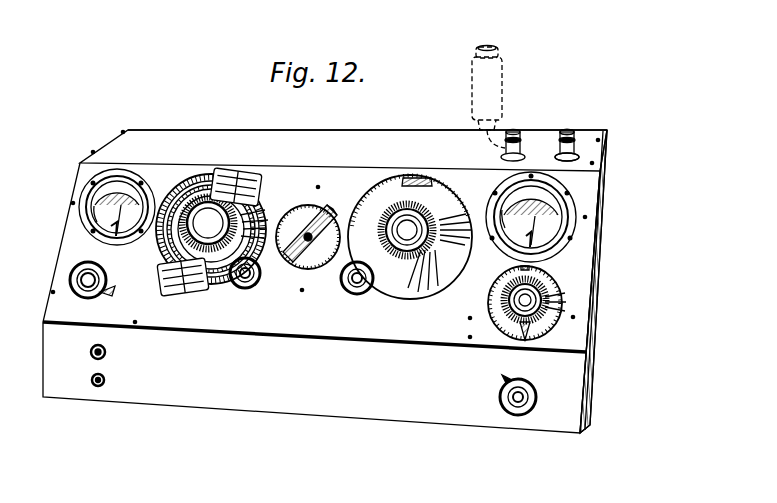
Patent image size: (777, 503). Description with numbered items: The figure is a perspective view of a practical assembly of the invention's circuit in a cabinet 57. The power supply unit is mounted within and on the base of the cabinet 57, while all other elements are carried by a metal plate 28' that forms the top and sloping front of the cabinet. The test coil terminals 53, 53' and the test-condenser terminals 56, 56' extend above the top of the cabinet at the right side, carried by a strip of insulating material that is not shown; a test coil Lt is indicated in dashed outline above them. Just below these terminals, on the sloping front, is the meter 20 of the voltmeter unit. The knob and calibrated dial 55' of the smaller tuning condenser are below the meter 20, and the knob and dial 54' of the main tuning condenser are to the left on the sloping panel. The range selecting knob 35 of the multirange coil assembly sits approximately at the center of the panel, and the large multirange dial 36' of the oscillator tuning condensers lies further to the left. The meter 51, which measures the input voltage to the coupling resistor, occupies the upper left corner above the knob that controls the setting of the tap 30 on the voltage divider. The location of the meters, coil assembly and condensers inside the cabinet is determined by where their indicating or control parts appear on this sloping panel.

The meter 51 is at (92, 192).
The tap 30 is at (70, 277).
The multirange dial 36' is at (212, 218).
The range selecting knob 35 is at (305, 206).
The knob and dial 54' is at (418, 237).
The metal plate 28' is at (367, 116).
The test coil terminal 53 is at (515, 128).
The test coil terminal 53' is at (557, 135).
The test-condenser terminal 56 is at (576, 131).
The test-condenser terminal 56' is at (602, 160).
The lamp Lt is at (472, 77).
The meter 20 is at (560, 228).
The knob and calibrated dial 55' is at (572, 303).
The cabinet 57 is at (602, 324).